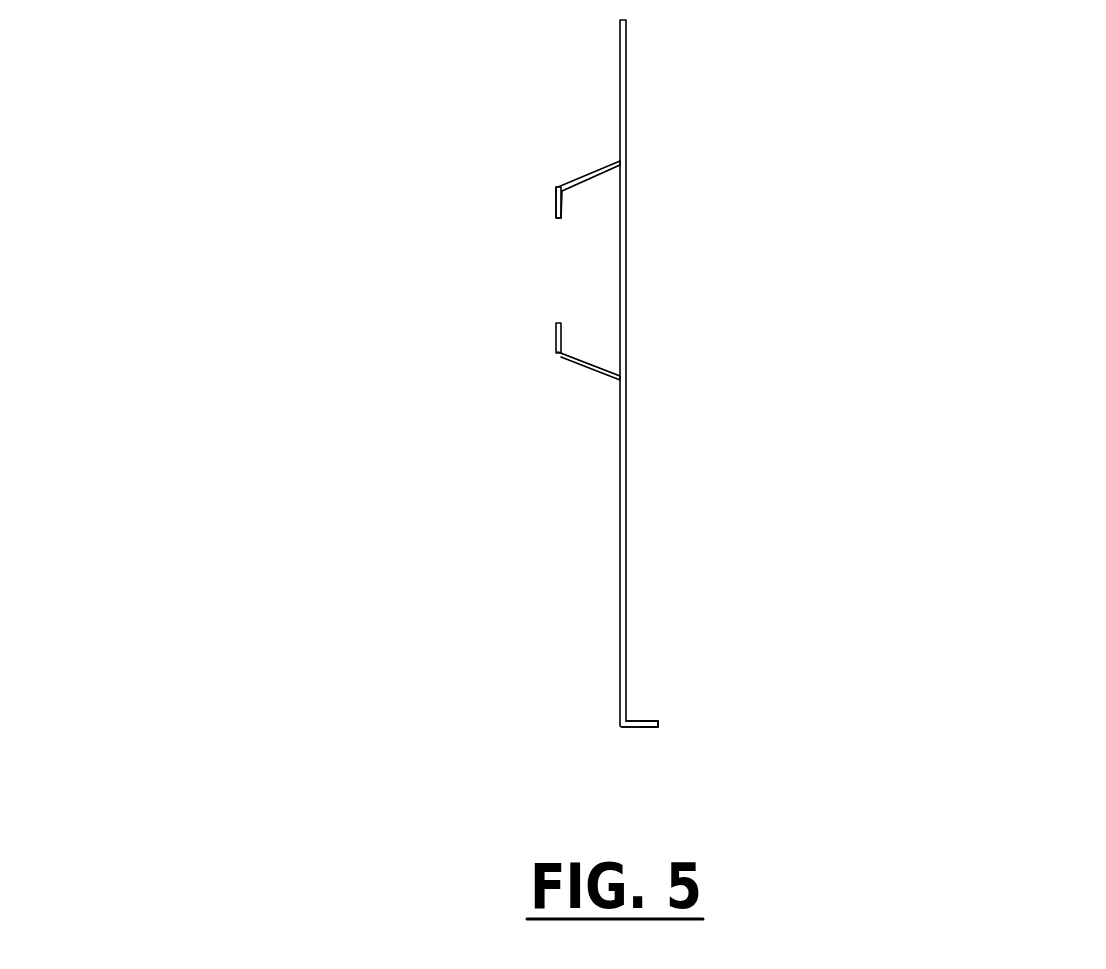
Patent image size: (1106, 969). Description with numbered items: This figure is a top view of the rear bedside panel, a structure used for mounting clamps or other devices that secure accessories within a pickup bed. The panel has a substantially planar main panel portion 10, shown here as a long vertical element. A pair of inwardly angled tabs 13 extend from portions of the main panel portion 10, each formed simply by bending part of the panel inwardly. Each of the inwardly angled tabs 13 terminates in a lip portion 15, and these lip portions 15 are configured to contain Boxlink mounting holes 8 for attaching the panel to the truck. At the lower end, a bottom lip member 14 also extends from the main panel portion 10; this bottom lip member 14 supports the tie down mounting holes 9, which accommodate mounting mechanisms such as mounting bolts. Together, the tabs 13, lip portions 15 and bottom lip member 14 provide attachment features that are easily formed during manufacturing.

The Boxlink mounting hole 8 is at (557, 200).
The tie down mounting hole 9 is at (647, 723).
The main panel portion 10 is at (626, 87).
The inwardly angled tab 13 is at (588, 181).
The bottom lip member 14 is at (643, 723).
The lip portion 15 is at (556, 192).